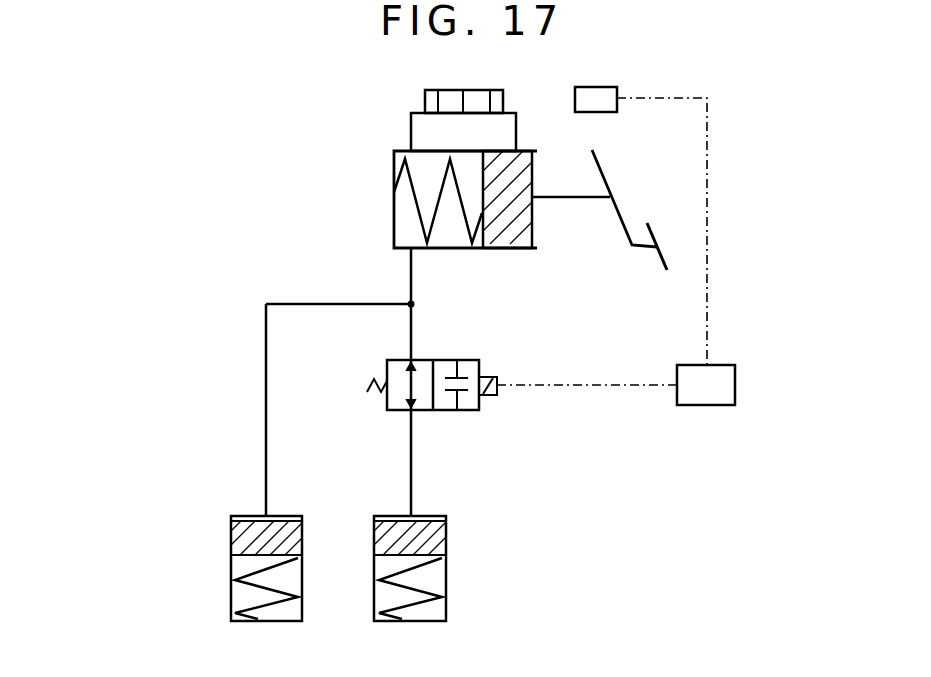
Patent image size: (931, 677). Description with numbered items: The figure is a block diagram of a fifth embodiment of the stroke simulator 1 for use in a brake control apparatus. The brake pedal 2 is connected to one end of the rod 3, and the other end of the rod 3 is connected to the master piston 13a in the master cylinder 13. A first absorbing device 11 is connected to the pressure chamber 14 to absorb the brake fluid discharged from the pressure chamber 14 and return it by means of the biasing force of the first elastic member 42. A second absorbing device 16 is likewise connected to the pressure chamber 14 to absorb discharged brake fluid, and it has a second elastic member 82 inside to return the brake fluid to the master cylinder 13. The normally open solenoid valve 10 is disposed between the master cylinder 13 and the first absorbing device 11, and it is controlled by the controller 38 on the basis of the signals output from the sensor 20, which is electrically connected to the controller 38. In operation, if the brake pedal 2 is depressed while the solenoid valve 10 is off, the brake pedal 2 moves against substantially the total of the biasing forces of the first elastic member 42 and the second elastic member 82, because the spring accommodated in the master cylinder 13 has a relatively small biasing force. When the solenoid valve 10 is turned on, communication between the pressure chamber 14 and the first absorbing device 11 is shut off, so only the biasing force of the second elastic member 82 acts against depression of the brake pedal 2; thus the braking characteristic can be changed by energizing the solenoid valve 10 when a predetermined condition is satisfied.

The stroke simulator 1 is at (298, 243).
The brake pedal 2 is at (657, 253).
The rod 3 is at (570, 197).
The solenoid valve 10 is at (425, 412).
The first absorbing device 11 is at (471, 573).
The master cylinder 13 is at (399, 209).
The master piston 13a is at (502, 247).
The pressure chamber 14 is at (403, 227).
The second absorbing device 16 is at (233, 570).
The sensor 20 is at (608, 87).
The controller 38 is at (717, 365).
The first elastic member 42 is at (427, 603).
The second elastic member 82 is at (282, 603).